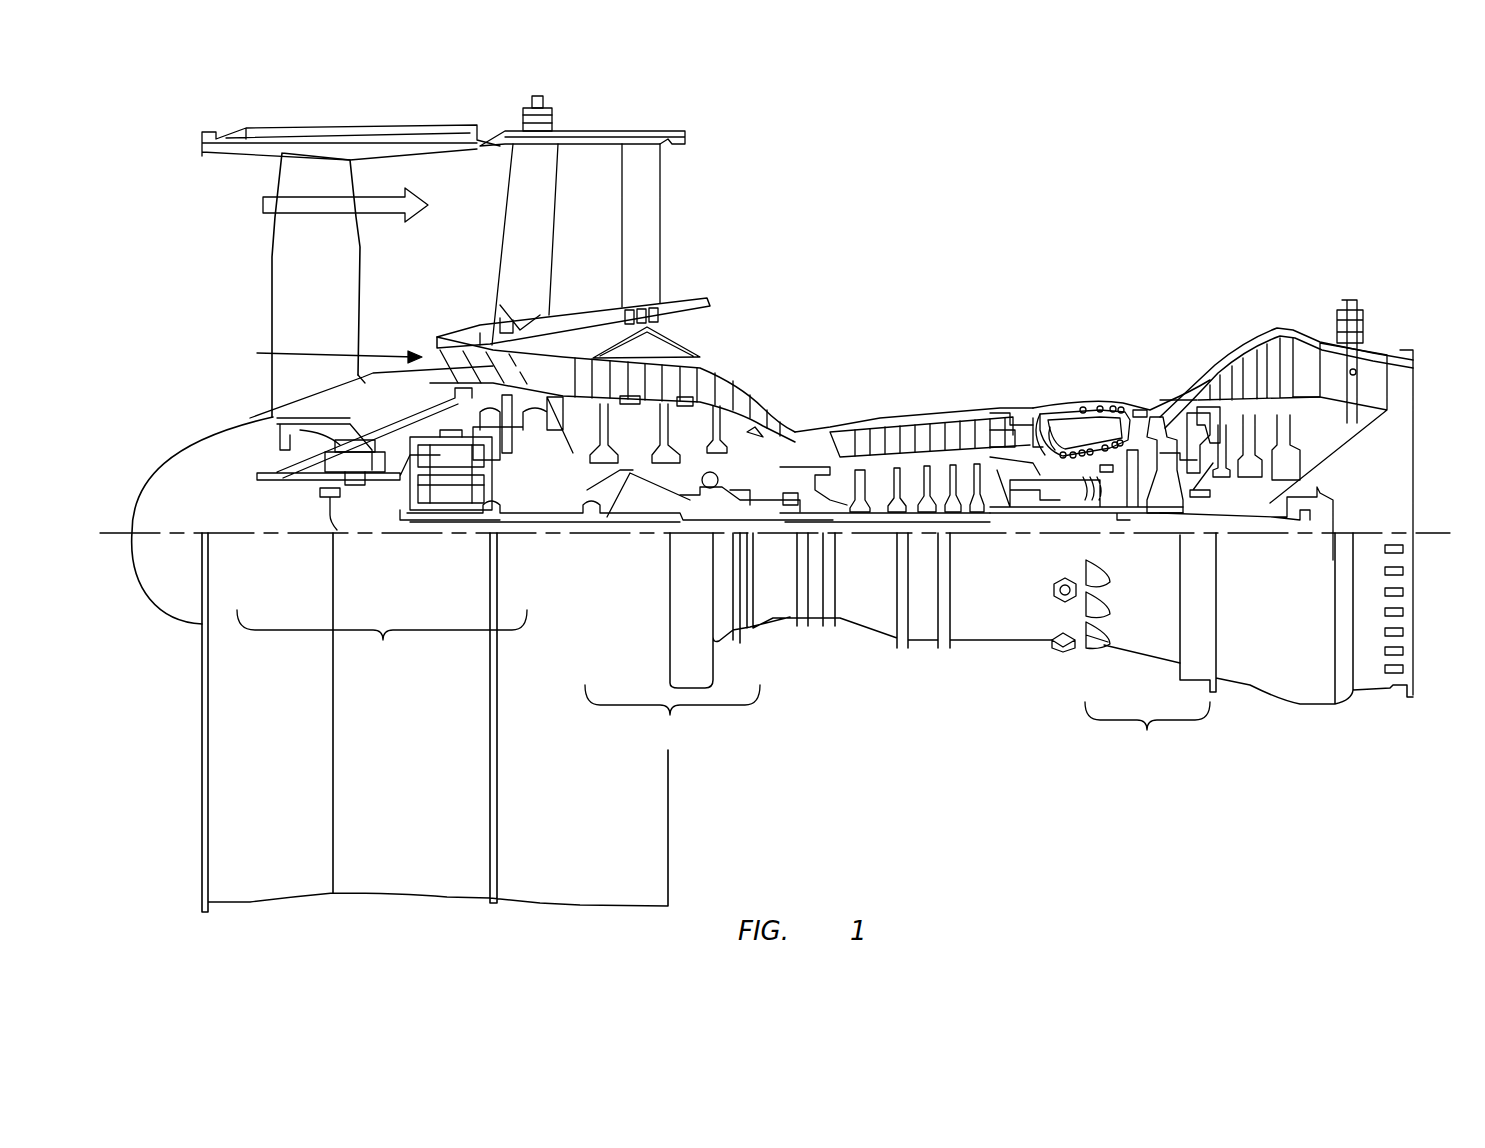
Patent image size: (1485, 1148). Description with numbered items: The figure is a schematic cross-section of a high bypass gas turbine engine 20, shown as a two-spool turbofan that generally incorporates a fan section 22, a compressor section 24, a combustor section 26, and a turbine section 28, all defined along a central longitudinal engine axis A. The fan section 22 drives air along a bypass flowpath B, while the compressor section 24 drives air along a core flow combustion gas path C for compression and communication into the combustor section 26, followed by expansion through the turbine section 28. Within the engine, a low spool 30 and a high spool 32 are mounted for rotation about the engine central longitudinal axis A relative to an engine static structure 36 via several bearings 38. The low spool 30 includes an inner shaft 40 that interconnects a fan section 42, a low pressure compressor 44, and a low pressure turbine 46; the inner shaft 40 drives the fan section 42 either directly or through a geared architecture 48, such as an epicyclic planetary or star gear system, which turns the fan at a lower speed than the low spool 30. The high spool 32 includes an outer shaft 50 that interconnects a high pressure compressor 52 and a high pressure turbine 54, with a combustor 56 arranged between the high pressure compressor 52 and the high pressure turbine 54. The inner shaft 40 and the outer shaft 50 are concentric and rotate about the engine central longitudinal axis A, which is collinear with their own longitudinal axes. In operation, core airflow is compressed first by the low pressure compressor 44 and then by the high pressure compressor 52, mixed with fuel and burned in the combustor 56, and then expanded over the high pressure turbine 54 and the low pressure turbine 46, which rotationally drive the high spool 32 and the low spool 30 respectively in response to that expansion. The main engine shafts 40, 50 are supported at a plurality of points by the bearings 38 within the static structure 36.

The gas turbine engine 20 is at (1142, 188).
The fan section 22 is at (490, 116).
The compressor section 24 is at (960, 270).
The combustor section 26 is at (1090, 270).
The turbine section 28 is at (1352, 270).
The low spool 30 is at (760, 482).
The high spool 32 is at (990, 490).
The engine static structure 36 is at (923, 662).
The bearings 38 is at (723, 688).
The inner shaft 40 is at (1133, 485).
The fan section 42 is at (333, 306).
The low pressure compressor 44 is at (694, 374).
The low pressure turbine 46 is at (1268, 355).
The geared architecture 48 is at (455, 480).
The outer shaft 50 is at (1125, 483).
The high pressure compressor 52 is at (848, 428).
The high pressure turbine 54 is at (1153, 425).
The combustor 56 is at (1092, 420).
The engine central longitudinal axis A is at (1440, 530).
The bypass flowpath B is at (265, 205).
The core flow combustion gas path C is at (292, 354).